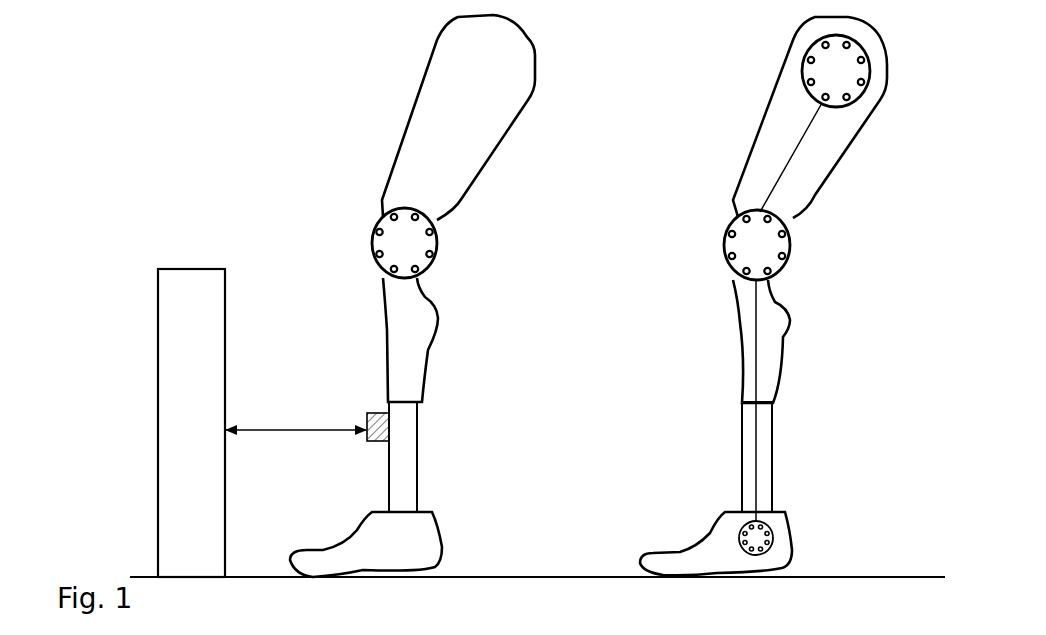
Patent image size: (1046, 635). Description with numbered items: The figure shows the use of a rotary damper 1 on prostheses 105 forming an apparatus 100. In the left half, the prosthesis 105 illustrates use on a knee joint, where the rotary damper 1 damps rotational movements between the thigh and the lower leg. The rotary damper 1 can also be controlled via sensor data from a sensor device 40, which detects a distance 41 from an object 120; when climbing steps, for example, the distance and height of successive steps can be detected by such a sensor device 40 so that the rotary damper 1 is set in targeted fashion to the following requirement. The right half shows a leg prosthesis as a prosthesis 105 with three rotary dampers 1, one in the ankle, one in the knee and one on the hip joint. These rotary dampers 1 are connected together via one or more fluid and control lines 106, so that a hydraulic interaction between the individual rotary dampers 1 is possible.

The apparatus 100 is at (297, 102).
The rotary damper 1 is at (392, 237).
The prosthesis 105 is at (352, 274).
The fluid and control lines 106 is at (797, 152).
The object 120 is at (172, 353).
The sensor device 40 is at (367, 413).
The distance 41 is at (292, 438).